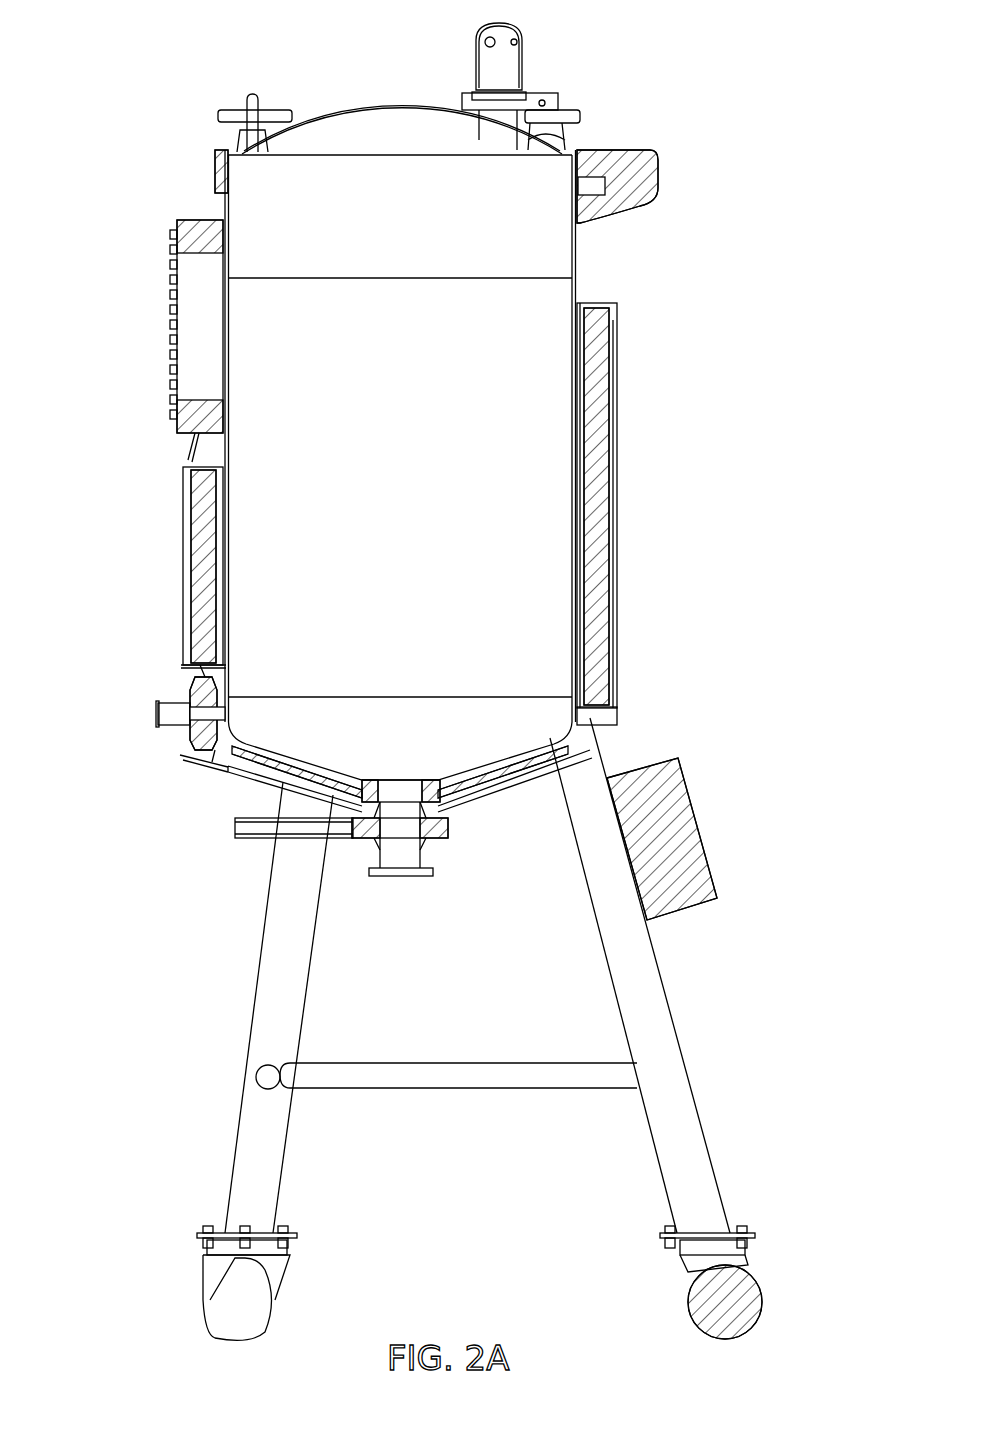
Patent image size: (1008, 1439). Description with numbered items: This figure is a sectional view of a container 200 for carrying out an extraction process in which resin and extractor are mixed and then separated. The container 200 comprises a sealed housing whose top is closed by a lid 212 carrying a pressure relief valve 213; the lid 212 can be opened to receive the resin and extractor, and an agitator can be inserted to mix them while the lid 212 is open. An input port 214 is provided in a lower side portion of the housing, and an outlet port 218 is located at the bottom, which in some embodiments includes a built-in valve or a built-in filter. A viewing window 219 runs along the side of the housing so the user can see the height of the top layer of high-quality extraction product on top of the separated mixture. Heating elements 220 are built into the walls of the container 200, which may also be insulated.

The container 200 is at (777, 142).
The lid 212 is at (355, 112).
The pressure relief valve 213 is at (520, 72).
The input port 214 is at (160, 710).
The outlet port 218 is at (422, 840).
The viewing window 219 is at (172, 327).
The heating elements 220 is at (218, 577).